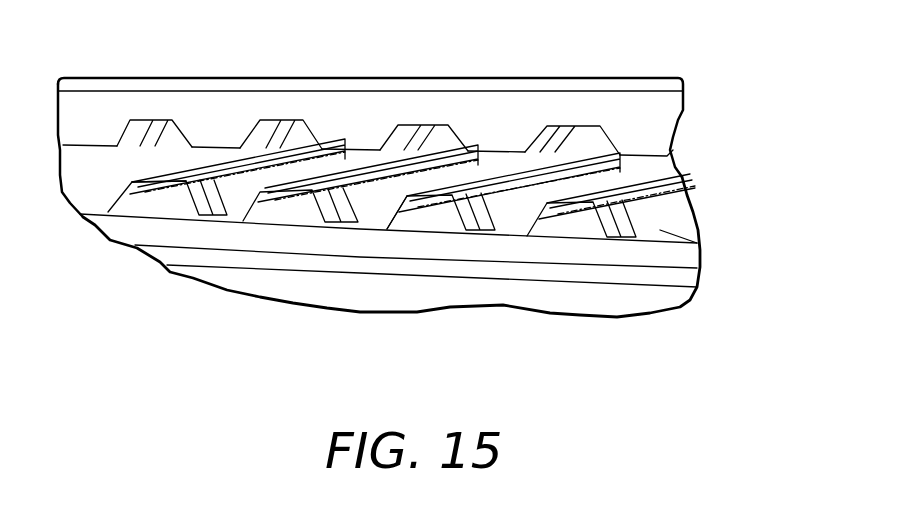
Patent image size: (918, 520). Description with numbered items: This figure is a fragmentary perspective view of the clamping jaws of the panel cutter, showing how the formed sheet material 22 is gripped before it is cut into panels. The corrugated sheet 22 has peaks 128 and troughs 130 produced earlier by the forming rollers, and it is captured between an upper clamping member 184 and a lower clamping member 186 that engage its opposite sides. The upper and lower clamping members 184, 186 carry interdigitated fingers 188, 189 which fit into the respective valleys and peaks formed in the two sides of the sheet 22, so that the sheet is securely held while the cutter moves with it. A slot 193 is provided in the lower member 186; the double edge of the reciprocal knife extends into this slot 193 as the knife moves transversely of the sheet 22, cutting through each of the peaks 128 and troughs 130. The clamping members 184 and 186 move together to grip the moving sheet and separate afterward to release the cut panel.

The sheet material 22 is at (683, 228).
The peaks 128 is at (138, 185).
The troughs 130 is at (385, 228).
The upper clamping member 184 is at (655, 91).
The lower clamping member 186 is at (685, 258).
The fingers of upper clamping member 188 is at (364, 145).
The fingers of lower clamping member 189 is at (553, 227).
The slot 193 is at (222, 215).